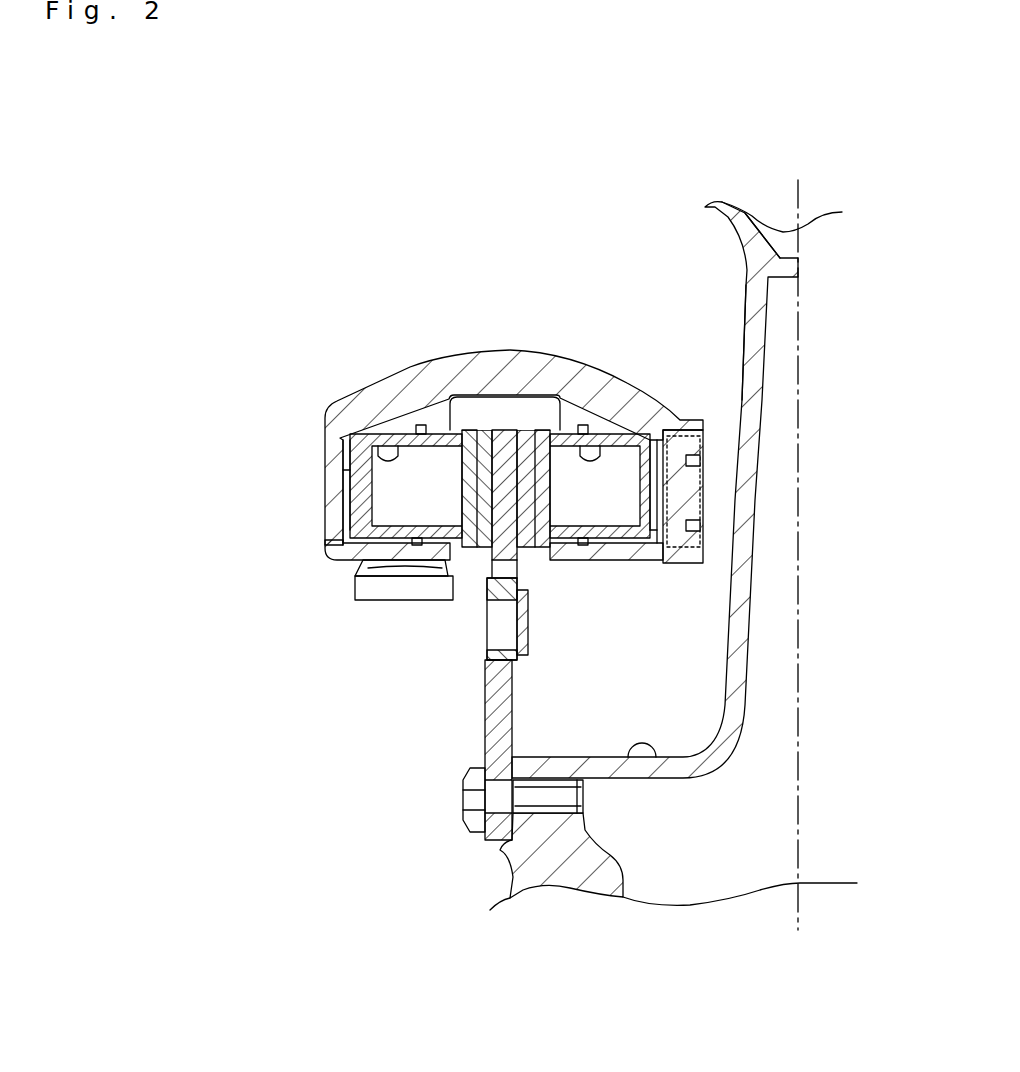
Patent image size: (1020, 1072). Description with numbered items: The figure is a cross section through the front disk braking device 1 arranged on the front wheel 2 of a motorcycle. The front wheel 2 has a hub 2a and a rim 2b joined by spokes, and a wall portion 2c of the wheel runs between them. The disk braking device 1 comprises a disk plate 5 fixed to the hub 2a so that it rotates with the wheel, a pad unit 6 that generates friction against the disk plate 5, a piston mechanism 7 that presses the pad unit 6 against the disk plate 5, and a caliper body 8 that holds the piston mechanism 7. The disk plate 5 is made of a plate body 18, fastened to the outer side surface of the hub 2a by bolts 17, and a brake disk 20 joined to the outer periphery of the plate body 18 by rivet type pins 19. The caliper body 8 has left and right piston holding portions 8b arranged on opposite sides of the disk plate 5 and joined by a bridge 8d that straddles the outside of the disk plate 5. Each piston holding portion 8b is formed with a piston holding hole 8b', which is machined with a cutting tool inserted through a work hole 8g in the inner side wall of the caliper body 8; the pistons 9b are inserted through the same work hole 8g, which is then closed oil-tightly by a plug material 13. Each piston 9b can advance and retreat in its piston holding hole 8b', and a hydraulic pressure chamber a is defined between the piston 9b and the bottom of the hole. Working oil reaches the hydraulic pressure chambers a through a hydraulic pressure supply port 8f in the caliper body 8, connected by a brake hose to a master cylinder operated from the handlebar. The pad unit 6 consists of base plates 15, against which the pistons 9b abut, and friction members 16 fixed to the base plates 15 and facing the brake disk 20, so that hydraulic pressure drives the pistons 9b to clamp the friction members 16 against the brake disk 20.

The front disk braking device 1 is at (327, 283).
The front wheel 2 is at (681, 191).
The hub 2a is at (652, 748).
The rim 2b is at (716, 211).
The bracket wall 2c is at (741, 352).
The disk plate 5 is at (468, 697).
The pad unit 6 is at (534, 568).
The piston mechanism 7 is at (408, 426).
The caliper body 8 is at (322, 407).
The second piston holding portion 8b is at (457, 547).
The piston holding hole 8b' is at (484, 409).
The bridge 8d is at (458, 398).
The hydraulic pressure supply port 8f is at (356, 578).
The work hole 8g is at (705, 450).
The piston 9b is at (362, 562).
The plug material 13 is at (705, 487).
The base plate 15 is at (421, 432).
The friction member 16 is at (467, 430).
The bolt 17 is at (463, 797).
The plate body 18 is at (512, 720).
The rivet type pin 19 is at (529, 657).
The brake disk 20 is at (488, 580).
The hydraulic pressure chamber a is at (345, 477).